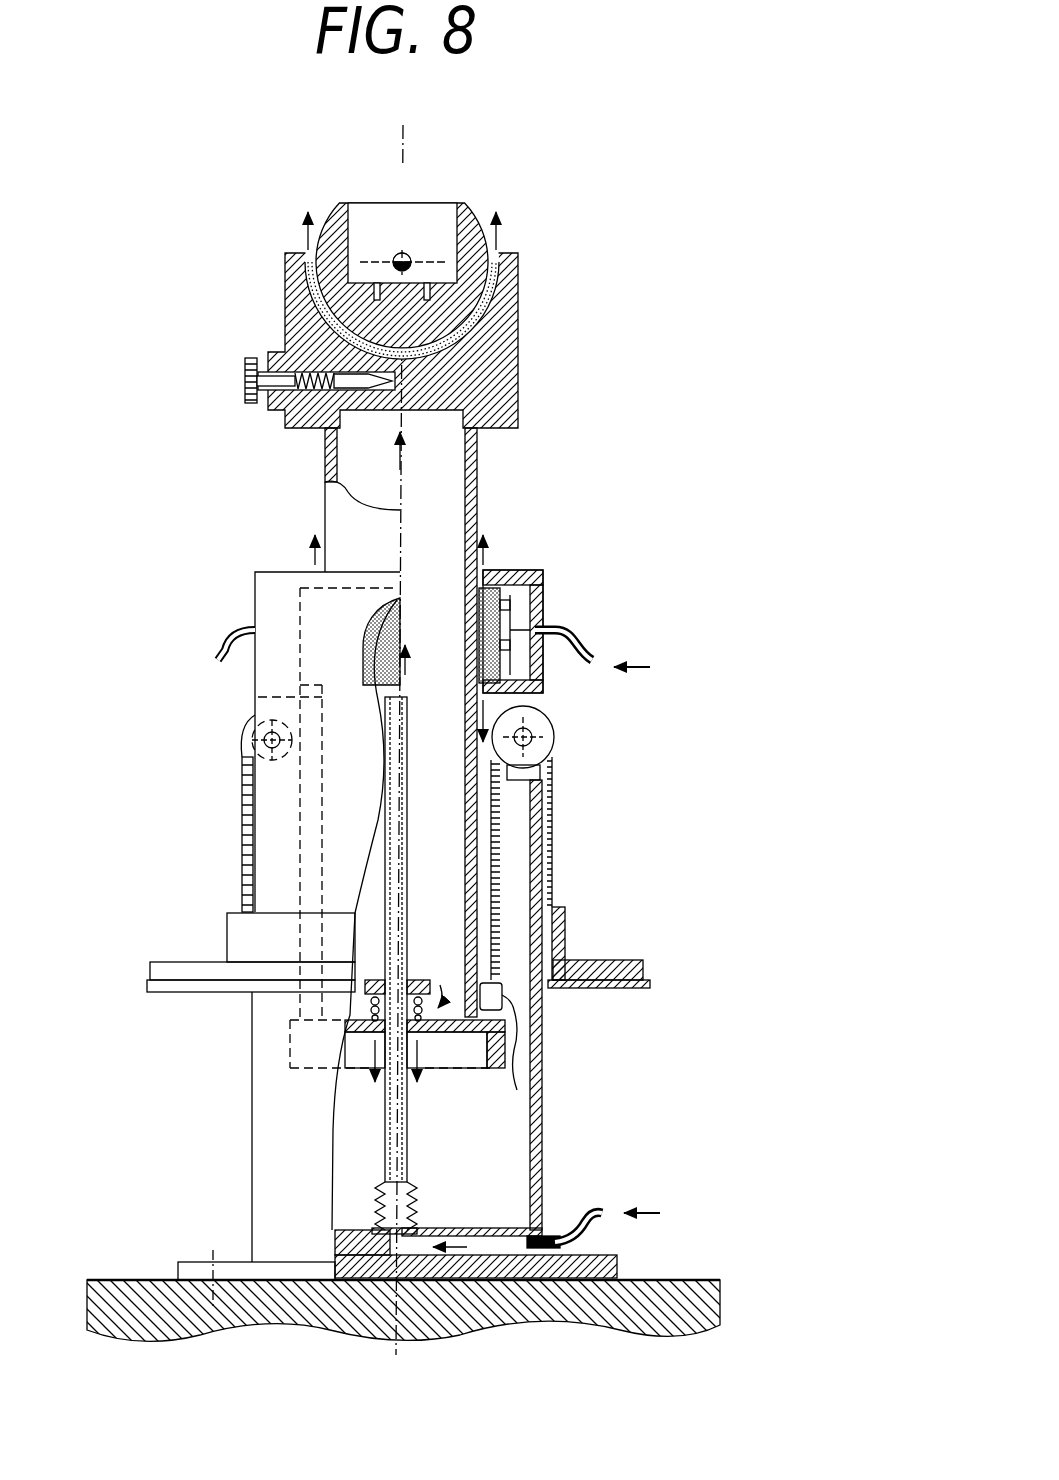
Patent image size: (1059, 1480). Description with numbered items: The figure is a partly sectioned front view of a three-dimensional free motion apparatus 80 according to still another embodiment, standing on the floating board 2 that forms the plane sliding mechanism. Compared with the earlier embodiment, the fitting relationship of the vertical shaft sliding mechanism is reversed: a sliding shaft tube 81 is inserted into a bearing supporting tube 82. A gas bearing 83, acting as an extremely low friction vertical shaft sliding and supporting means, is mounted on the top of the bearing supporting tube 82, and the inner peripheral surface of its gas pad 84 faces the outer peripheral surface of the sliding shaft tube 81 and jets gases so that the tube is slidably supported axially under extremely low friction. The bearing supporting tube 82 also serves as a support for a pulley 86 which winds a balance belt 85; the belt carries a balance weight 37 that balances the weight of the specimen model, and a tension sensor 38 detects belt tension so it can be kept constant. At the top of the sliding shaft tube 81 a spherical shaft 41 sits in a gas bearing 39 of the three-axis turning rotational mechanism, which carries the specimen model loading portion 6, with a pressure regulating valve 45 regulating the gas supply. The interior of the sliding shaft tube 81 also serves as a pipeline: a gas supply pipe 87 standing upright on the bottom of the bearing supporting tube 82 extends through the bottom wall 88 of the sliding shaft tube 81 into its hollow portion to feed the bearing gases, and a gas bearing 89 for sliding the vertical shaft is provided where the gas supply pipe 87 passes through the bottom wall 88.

The floating board 2 is at (656, 1278).
The specimen model loading portion 6 is at (430, 210).
The balance weight 37 is at (645, 963).
The tension sensor 38 is at (492, 996).
The gas bearing 39 is at (313, 308).
The spherical shaft 41 is at (490, 253).
The pressure regulating valve 45 is at (247, 375).
The free motion apparatus 80 is at (248, 600).
The sliding shaft tube 81 is at (478, 465).
The bearing supporting tube 82 is at (544, 1115).
The gas bearing 83 is at (512, 566).
The gas pad 84 is at (492, 630).
The balance belt 85 is at (556, 848).
The pulley 86 is at (554, 737).
The gas supply pipe 87 is at (382, 1130).
The bottom wall 88 is at (455, 1035).
The gas bearing 89 is at (358, 1006).